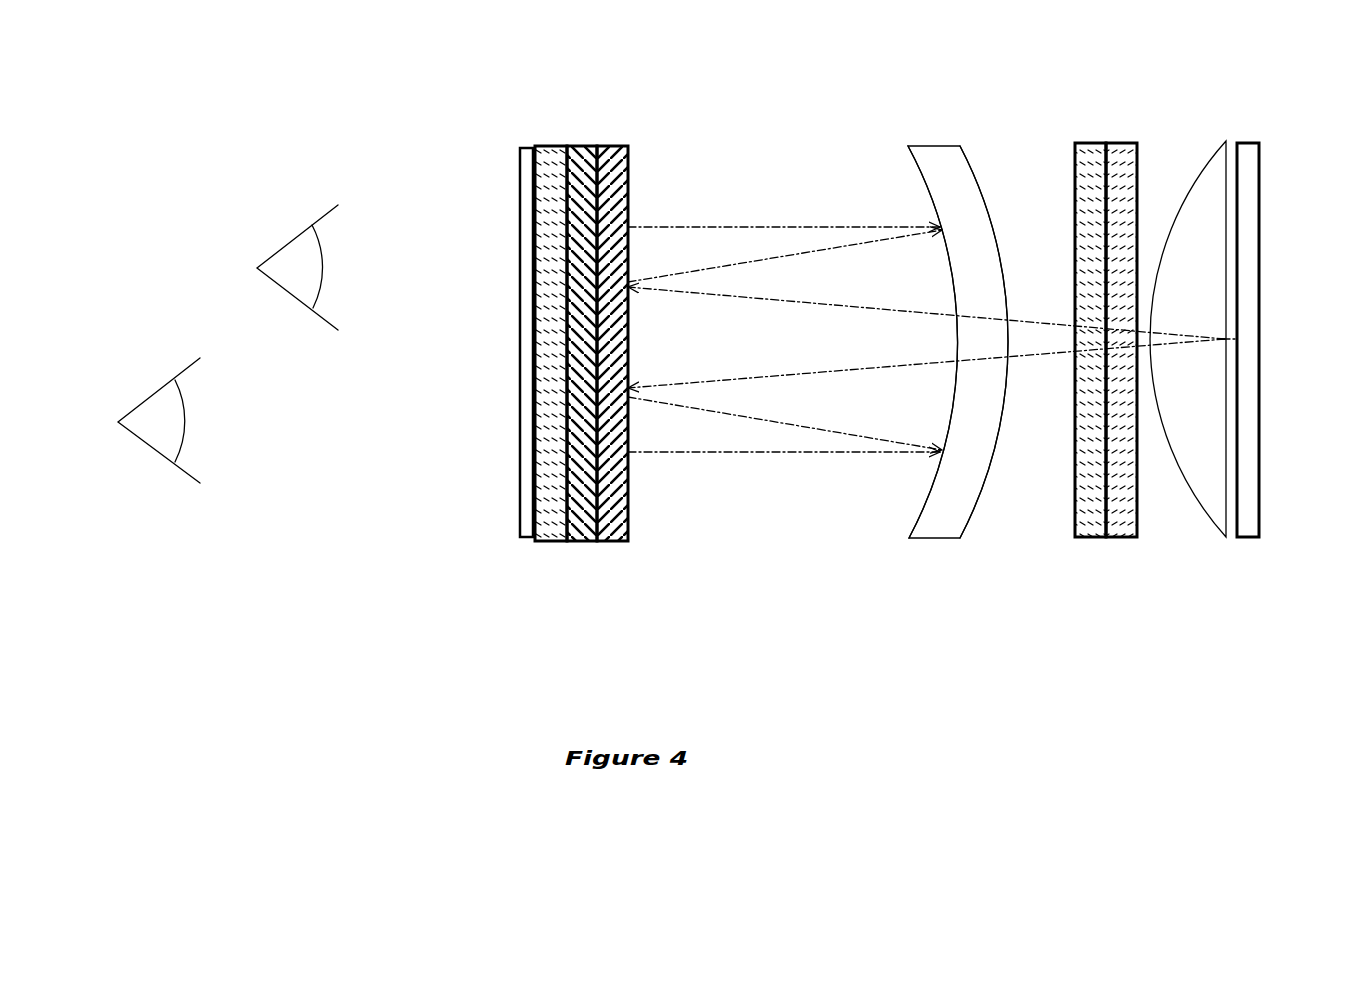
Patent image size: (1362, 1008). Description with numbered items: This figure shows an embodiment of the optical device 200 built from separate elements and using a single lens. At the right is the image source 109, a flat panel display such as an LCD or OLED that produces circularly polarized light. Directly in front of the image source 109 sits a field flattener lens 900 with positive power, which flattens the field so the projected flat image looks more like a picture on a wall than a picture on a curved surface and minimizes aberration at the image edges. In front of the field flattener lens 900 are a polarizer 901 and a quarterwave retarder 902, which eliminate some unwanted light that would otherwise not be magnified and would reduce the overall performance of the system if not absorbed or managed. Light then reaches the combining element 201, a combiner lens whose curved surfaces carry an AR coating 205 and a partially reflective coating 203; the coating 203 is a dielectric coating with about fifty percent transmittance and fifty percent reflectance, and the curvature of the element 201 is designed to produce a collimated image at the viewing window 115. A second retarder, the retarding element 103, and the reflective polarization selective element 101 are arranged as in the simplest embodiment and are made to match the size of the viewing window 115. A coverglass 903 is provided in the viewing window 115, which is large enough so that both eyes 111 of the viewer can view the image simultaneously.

The eyes 111 is at (312, 224).
The optical display system 200 is at (1085, 72).
The viewing window 115 is at (527, 148).
The coverglass 903 is at (553, 541).
The reflective polarization selective element 101 is at (588, 140).
The retarding element 103 is at (612, 146).
The combining element 201 is at (927, 146).
The partially reflective coating 203 is at (918, 535).
The AR coating 205 is at (972, 522).
The retarder 902 is at (1088, 535).
The polarizer 901 is at (1120, 530).
The field flattener lens 900 is at (1211, 180).
The image source 109 is at (1240, 148).